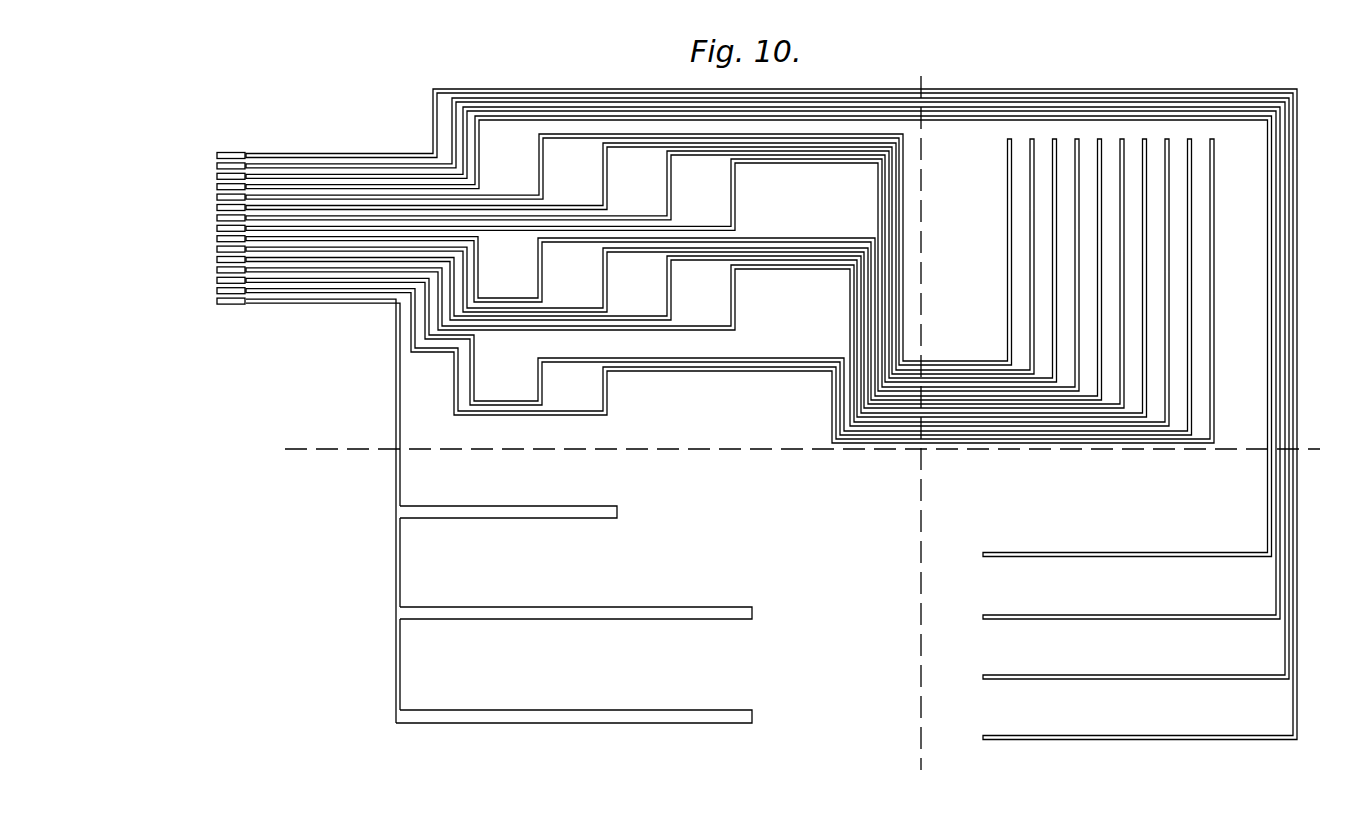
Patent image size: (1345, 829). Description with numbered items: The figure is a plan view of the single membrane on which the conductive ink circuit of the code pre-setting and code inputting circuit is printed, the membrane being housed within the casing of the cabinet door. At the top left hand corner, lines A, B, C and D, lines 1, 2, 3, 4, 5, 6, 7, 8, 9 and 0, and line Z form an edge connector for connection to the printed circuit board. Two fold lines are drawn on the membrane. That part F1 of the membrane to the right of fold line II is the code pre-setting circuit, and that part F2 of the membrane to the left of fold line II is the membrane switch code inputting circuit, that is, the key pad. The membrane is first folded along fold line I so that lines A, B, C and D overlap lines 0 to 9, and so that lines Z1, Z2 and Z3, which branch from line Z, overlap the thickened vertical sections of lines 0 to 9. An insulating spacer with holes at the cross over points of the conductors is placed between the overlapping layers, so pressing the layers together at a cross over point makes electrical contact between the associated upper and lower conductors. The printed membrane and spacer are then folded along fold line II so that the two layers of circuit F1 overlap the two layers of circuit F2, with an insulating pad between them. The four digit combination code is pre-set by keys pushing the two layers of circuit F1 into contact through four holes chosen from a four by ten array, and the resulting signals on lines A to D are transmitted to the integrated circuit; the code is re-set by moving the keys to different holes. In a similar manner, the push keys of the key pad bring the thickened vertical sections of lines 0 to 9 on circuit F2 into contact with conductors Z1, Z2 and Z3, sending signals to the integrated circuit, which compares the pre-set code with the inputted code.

The line A is at (212, 152).
The line B is at (214, 163).
The line C is at (214, 175).
The line D is at (214, 186).
The line 1 is at (214, 197).
The line 2 is at (214, 208).
The line 3 is at (214, 218).
The line 4 is at (214, 228).
The line 5 is at (214, 239).
The line 6 is at (214, 249).
The line 7 is at (214, 260).
The line 8 is at (214, 270).
The line 9 is at (214, 280).
The line 0 is at (214, 291).
The line Z is at (214, 302).
The line Z1 is at (508, 501).
The line Z2 is at (576, 603).
The line Z3 is at (574, 706).
The code pre-setting circuit F1 is at (1068, 84).
The membrane switch code inputting circuit F2 is at (594, 84).
The fold line I— I is at (799, 449).
The fold line II— II is at (917, 426).